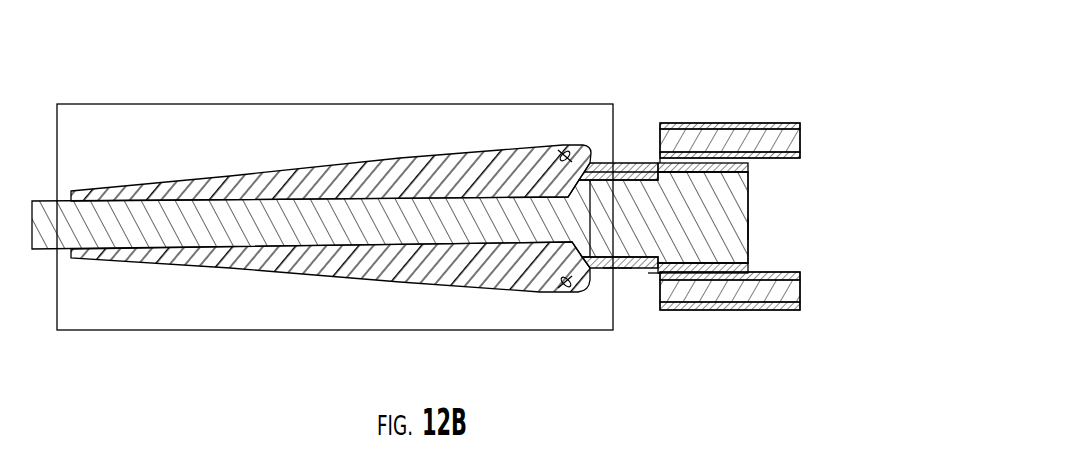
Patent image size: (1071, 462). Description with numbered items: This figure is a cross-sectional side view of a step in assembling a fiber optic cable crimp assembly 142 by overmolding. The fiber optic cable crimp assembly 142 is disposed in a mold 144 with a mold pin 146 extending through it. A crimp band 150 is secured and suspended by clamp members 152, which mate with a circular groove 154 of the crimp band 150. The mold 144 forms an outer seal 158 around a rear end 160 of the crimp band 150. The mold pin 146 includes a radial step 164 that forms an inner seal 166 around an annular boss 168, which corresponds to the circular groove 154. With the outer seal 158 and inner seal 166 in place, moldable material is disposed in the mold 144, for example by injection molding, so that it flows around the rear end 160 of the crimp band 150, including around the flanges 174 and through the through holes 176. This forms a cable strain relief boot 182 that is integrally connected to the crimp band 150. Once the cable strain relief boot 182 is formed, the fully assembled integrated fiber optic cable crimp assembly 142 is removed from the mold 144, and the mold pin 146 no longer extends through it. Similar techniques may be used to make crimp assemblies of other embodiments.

The fiber optic cable crimp assembly 142 is at (653, 114).
The mold 144 is at (248, 143).
The mold pin 146 is at (393, 232).
The crimp band 150 is at (623, 275).
The clamp members 152 is at (725, 138).
The circular groove 154 is at (653, 274).
The outer seal 158 is at (625, 162).
The rear end 160 is at (610, 272).
The radial step 164 is at (667, 178).
The inner seal 166 is at (698, 222).
The annular boss 168 is at (746, 226).
The flanges 174 is at (562, 150).
The through holes 176 is at (584, 152).
The cable strain relief boot 182 is at (443, 152).